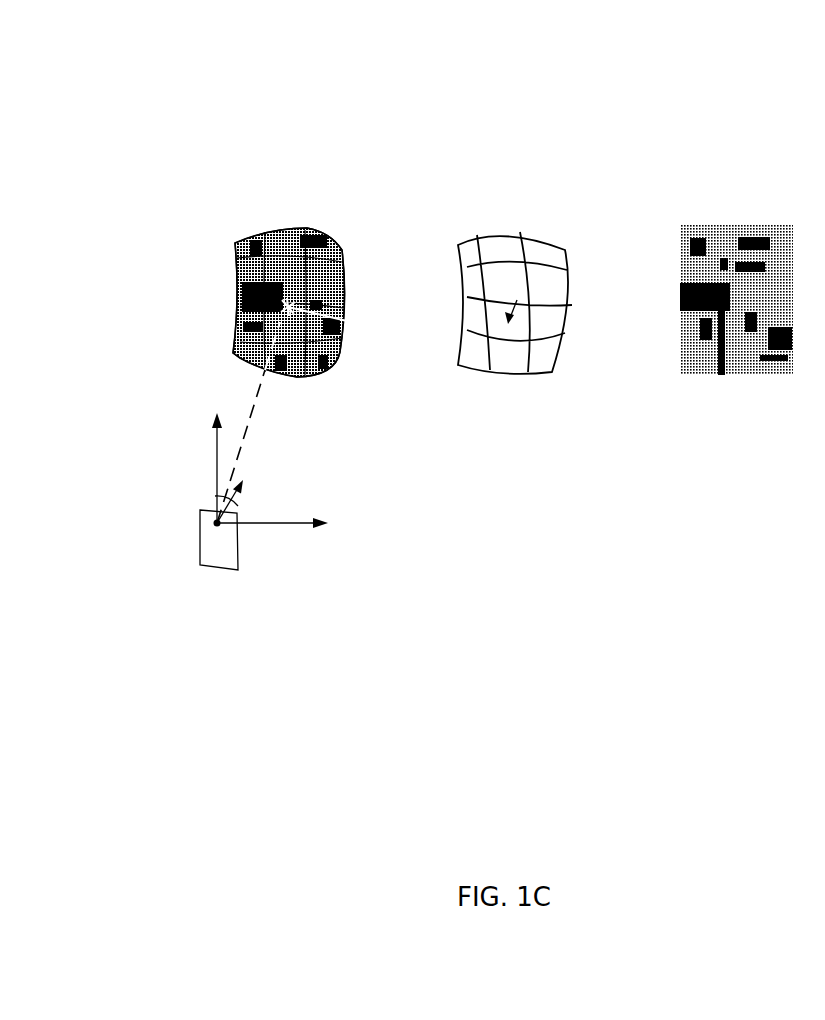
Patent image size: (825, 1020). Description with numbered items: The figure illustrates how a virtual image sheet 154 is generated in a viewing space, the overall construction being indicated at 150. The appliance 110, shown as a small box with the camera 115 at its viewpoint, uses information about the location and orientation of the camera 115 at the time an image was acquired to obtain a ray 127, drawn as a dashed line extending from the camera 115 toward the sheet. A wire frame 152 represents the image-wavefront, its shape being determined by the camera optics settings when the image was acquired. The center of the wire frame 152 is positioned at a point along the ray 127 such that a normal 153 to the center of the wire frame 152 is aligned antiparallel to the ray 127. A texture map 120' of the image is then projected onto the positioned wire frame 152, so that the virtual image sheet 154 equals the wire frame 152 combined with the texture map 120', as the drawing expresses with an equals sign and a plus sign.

The image composition process 150 is at (520, 67).
The virtual image sheet 154 is at (280, 227).
The wire frame 152 is at (509, 227).
The normal 153 is at (517, 300).
The texture map 120' is at (741, 277).
The ray 127 is at (253, 413).
The camera 115 is at (212, 527).
The appliance 110 is at (254, 571).